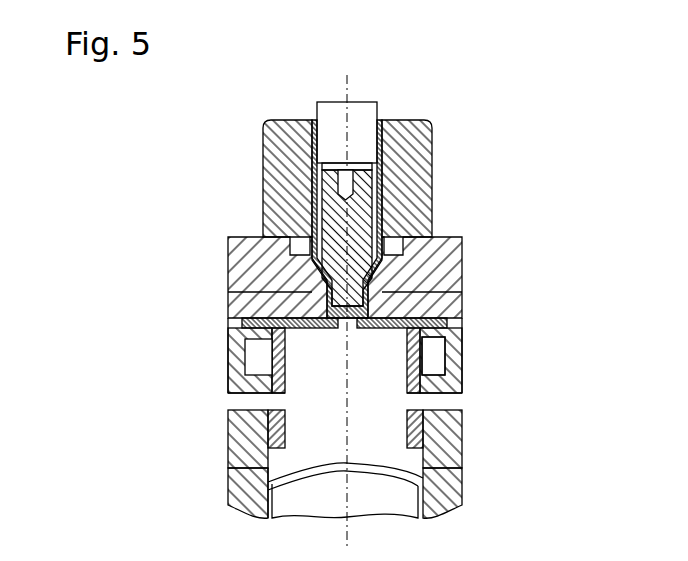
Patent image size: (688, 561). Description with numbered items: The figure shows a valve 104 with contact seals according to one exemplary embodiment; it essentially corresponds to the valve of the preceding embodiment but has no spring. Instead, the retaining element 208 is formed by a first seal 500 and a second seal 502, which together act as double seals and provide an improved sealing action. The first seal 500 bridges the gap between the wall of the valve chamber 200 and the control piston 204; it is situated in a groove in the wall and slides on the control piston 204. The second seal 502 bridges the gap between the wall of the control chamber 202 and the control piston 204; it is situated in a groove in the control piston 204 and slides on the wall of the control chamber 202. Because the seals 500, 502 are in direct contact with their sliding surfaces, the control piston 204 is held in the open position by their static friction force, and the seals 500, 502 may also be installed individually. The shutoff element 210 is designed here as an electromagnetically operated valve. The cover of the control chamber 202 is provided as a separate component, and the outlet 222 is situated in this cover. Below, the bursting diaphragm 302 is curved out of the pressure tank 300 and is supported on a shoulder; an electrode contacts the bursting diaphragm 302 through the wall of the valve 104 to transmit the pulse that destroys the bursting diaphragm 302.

The valve 104 is at (128, 193).
The shutoff element 210 is at (367, 110).
The outlet 222 is at (322, 313).
The control chamber 202 is at (462, 300).
The second seal 502 is at (262, 328).
The retaining element 208 is at (462, 330).
The control piston 204 is at (398, 362).
The first seal 500 is at (262, 385).
The valve chamber 200 is at (308, 452).
The pressure tank 300 is at (308, 499).
The bursting diaphragm 302 is at (400, 468).